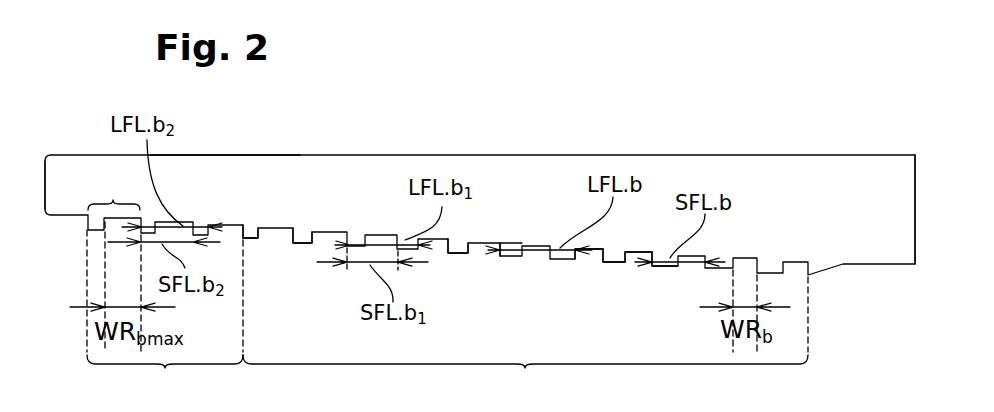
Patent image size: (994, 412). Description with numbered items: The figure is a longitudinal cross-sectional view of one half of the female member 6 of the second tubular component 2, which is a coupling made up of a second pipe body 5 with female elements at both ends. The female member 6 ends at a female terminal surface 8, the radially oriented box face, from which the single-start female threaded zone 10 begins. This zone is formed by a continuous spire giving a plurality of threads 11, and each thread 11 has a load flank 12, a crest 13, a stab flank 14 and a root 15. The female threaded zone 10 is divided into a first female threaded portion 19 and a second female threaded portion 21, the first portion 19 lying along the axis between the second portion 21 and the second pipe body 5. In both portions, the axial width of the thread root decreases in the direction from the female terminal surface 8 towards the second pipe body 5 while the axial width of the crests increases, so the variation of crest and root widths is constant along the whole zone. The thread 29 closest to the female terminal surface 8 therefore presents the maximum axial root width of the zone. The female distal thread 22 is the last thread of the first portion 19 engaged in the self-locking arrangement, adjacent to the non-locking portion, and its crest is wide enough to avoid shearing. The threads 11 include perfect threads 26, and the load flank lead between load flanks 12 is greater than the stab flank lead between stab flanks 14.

The second tubular component 2 is at (638, 142).
The second pipe body 5 is at (890, 190).
The female member 6 is at (227, 173).
The female terminal surface 8 is at (45, 175).
The female threaded zone 10 is at (460, 255).
The thread 11 is at (303, 245).
The load flank 12 is at (636, 263).
The crest 13 is at (612, 263).
The stab flank 14 is at (590, 263).
The root 15 is at (643, 265).
The first female threaded portion 19 is at (525, 336).
The second female threaded portion 21 is at (165, 309).
The female distal thread 22 is at (252, 232).
The perfect thread 26 is at (512, 243).
The thread closest to the female terminal surface 29 is at (114, 192).